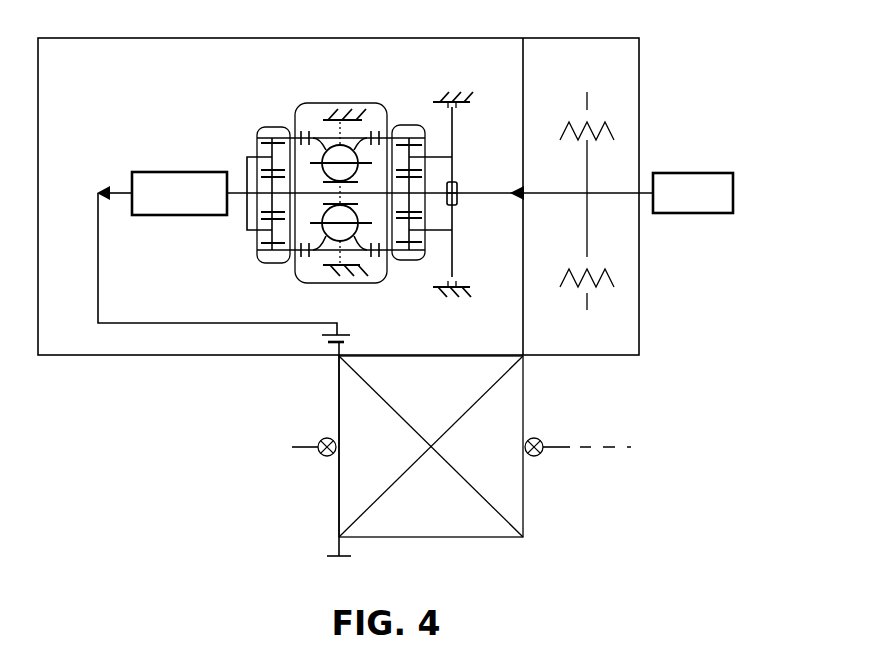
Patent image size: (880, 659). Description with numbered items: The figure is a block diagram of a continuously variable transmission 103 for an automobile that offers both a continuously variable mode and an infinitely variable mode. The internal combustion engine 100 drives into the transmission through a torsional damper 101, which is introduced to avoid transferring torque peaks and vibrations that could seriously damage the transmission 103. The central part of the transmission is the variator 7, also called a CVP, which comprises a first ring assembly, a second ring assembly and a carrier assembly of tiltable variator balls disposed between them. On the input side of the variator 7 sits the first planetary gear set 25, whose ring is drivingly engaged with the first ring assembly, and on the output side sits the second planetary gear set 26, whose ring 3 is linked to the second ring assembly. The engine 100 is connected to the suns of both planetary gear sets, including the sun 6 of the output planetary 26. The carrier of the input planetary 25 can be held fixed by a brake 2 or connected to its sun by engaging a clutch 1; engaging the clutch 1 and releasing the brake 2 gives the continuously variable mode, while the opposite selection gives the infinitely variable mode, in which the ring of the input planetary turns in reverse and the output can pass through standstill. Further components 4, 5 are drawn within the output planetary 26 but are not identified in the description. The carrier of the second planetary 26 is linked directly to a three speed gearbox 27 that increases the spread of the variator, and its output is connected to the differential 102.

The clutch 1 is at (465, 207).
The brake 2 is at (460, 117).
The ring 3 is at (275, 136).
The first clutch 4 is at (270, 148).
The second clutch 5 is at (243, 153).
The sun 6 is at (268, 197).
The variator 7 is at (362, 292).
The first planetary gear set 25 is at (405, 124).
The second planetary gear set 26 is at (277, 265).
The gearbox 27 is at (217, 253).
The internal combustion engine 100 is at (723, 165).
The torsional damper 101 is at (602, 26).
The differential 102 is at (468, 544).
The continuously variable transmission 103 is at (306, 25).